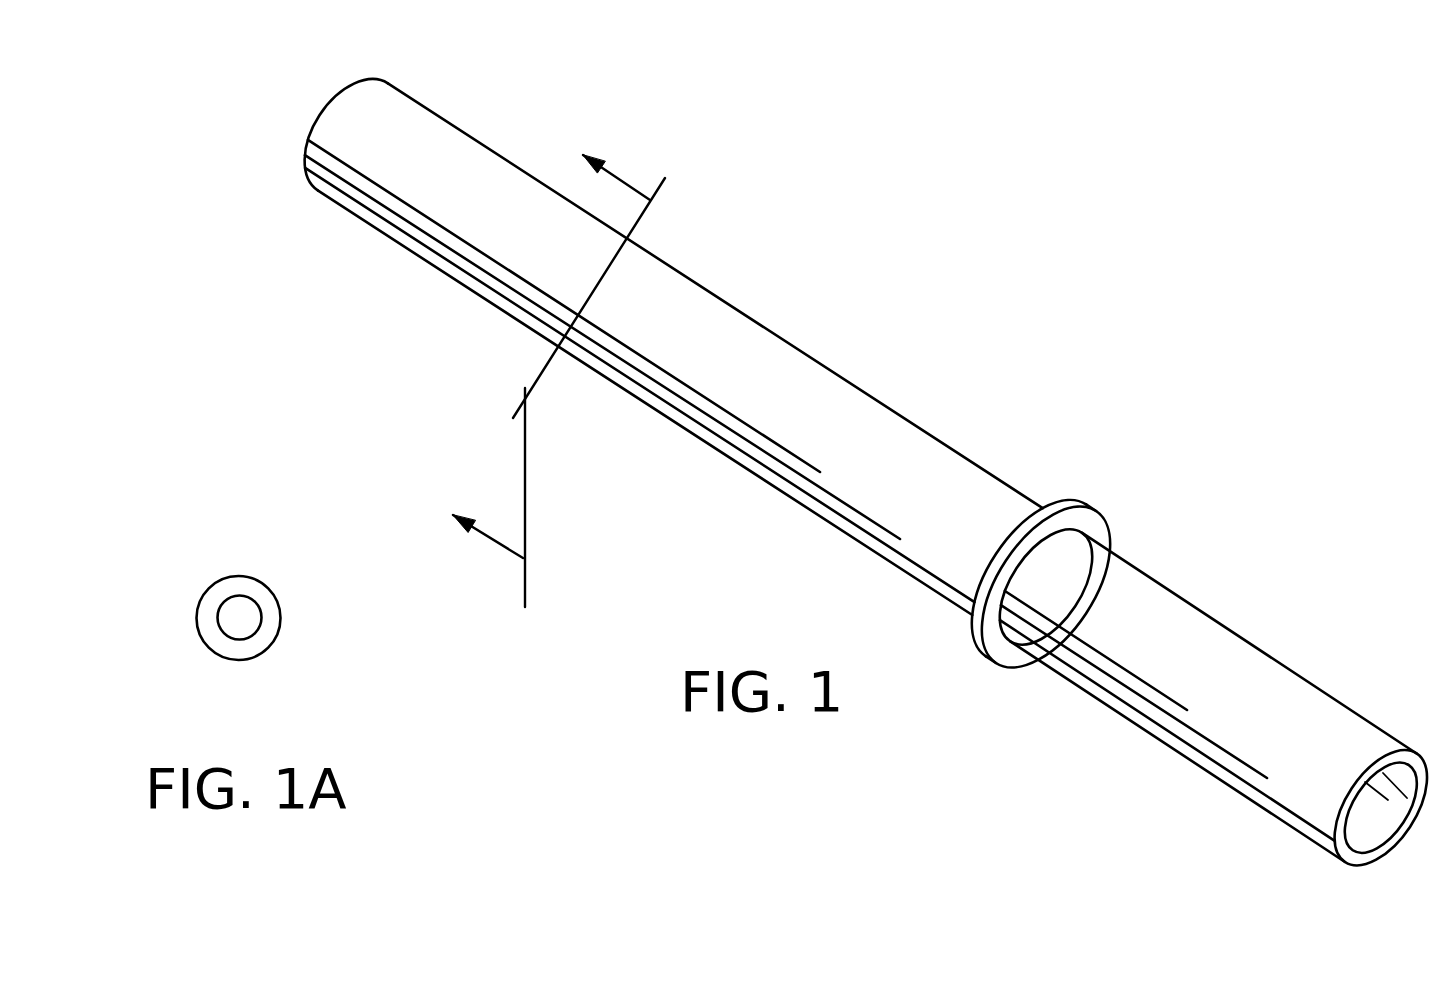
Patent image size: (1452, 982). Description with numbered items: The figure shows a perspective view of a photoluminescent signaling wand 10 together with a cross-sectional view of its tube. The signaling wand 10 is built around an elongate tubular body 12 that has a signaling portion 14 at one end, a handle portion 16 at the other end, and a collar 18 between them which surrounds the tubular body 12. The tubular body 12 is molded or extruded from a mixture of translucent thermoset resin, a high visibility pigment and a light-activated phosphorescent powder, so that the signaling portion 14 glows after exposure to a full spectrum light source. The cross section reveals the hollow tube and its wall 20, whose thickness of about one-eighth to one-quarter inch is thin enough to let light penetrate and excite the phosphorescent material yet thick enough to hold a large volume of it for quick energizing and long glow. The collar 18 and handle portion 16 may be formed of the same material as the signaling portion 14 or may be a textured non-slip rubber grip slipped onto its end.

In FIG. 1, the signaling wand 10 is at (1013, 278).
In FIG. 1A, the signaling wand 10 is at (195, 578).
In FIG. 1, the elongate tubular body 12 is at (755, 323).
In FIG. 1A, the elongate tubular body 12 is at (275, 597).
In FIG. 1, the signaling portion 14 is at (650, 253).
In FIG. 1, the handle portion 16 is at (1250, 640).
In FIG. 1, the collar 18 is at (1067, 498).
In FIG. 1A, the wall 20 is at (263, 640).